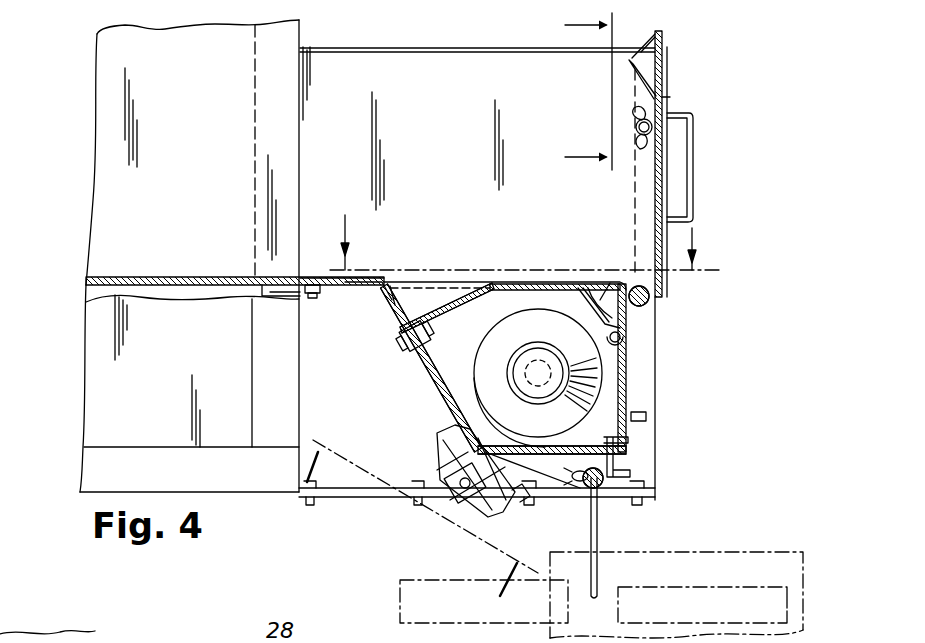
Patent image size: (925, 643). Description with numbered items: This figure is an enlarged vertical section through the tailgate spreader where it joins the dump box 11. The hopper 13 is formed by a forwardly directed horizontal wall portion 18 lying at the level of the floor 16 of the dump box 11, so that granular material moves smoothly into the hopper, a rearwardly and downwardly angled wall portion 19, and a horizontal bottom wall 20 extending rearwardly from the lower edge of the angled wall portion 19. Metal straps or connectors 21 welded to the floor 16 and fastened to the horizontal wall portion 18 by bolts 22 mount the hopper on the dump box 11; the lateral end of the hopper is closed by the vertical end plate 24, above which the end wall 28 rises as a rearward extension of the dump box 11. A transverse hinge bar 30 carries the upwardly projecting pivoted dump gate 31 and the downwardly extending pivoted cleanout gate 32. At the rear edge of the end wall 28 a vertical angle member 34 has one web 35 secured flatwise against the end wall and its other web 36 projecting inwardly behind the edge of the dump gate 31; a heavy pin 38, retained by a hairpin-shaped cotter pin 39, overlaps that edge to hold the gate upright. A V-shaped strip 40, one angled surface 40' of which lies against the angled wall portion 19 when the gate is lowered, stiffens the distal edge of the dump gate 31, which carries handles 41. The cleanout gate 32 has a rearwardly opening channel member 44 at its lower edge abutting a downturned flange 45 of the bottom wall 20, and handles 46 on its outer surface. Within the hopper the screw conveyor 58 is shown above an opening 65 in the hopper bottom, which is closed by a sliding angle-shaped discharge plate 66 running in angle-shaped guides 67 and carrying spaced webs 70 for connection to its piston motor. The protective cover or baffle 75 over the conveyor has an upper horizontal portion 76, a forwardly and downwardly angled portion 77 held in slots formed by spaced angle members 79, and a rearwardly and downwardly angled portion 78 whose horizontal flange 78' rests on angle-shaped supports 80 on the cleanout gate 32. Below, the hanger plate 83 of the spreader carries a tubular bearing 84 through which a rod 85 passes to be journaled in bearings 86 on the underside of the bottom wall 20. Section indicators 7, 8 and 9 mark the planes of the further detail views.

The section line 7- 7 is at (573, 94).
The section line 8- 8 is at (422, 518).
The section line 9- 9 is at (525, 242).
The dump box 11 is at (104, 100).
The hopper 13 is at (700, 368).
The floor 16 is at (190, 277).
The horizontal wall portion 18 is at (336, 278).
The angled wall portion 19 is at (388, 303).
The bottom wall 20 is at (603, 417).
The straps or connectors 21 is at (282, 286).
The bolts 22 is at (313, 293).
The vertical end plate 24 is at (358, 408).
The end wall 28 is at (444, 33).
The hinge bar 30 is at (652, 300).
The dump gate 31 is at (668, 80).
The cleanout gate 32 is at (626, 358).
The vertical angle member 34 is at (665, 46).
The web 35 is at (670, 98).
The web 36 is at (633, 218).
The pin 38 is at (639, 127).
The cotter pin 39 is at (632, 108).
The V-shaped strip 40 is at (592, 66).
The angled surface 40' is at (644, 26).
The handles 41 is at (697, 160).
The channel member 44 is at (632, 462).
The downturned flange 45 is at (622, 500).
The handles 46 is at (648, 418).
The screw conveyor 58 is at (533, 343).
The opening 65 is at (436, 362).
The discharge plate 66 is at (425, 380).
The angle-shaped guides 67 is at (400, 333).
The spaced webs 70 is at (437, 456).
The protective cover or baffle 75 is at (586, 282).
The upper horizontal portion 76 is at (562, 282).
The forwardly and downwardly angled portion 77 is at (457, 292).
The rearwardly and downwardly angled portion 78 is at (552, 354).
The horizontal flange 78' is at (622, 271).
The spaced angle members 79 is at (430, 292).
The angle-shaped supports 80 is at (620, 340).
The hanger plate 83 is at (598, 566).
The tubular bearing 84 is at (550, 488).
The rod 85 is at (588, 490).
The bearings 86 is at (538, 441).